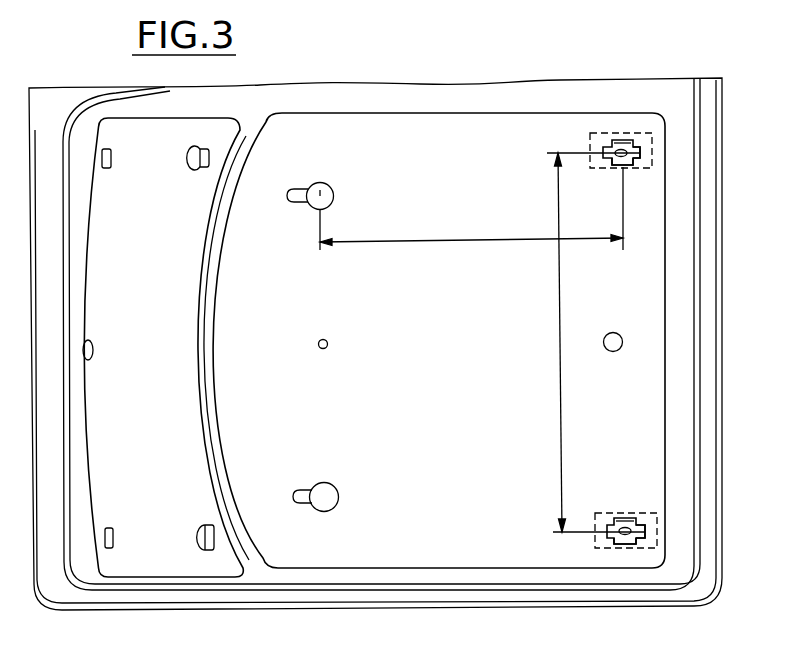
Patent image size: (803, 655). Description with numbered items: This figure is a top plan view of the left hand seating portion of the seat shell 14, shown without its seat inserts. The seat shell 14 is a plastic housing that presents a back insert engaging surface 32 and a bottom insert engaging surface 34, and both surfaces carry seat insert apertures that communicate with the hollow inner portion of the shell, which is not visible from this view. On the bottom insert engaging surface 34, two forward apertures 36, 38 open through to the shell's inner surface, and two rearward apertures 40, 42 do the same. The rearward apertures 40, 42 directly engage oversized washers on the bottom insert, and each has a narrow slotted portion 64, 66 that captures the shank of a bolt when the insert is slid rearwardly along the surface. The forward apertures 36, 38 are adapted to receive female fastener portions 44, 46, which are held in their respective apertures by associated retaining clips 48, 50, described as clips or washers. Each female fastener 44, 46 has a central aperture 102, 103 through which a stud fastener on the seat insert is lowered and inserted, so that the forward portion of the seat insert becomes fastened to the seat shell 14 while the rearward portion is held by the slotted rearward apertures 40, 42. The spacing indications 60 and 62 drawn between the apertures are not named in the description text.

The seat shell 14 is at (724, 360).
The back insert engaging surface 32 is at (160, 378).
The bottom insert engaging surface 34 is at (416, 316).
The forward aperture 36 is at (624, 139).
The forward aperture 38 is at (633, 546).
The rearward aperture 40 is at (324, 182).
The rearward aperture 42 is at (337, 488).
The female fastener portion 44 is at (641, 152).
The female fastener portion 46 is at (650, 531).
The retaining clip 48 is at (590, 137).
The retaining clip 50 is at (627, 512).
The vertical spacing dimension 60 is at (559, 345).
The horizontal spacing dimension 62 is at (460, 240).
The narrow slotted portion 64 is at (298, 198).
The narrow slotted portion 66 is at (300, 491).
The central aperture 102 is at (616, 547).
The central aperture 103 is at (632, 164).